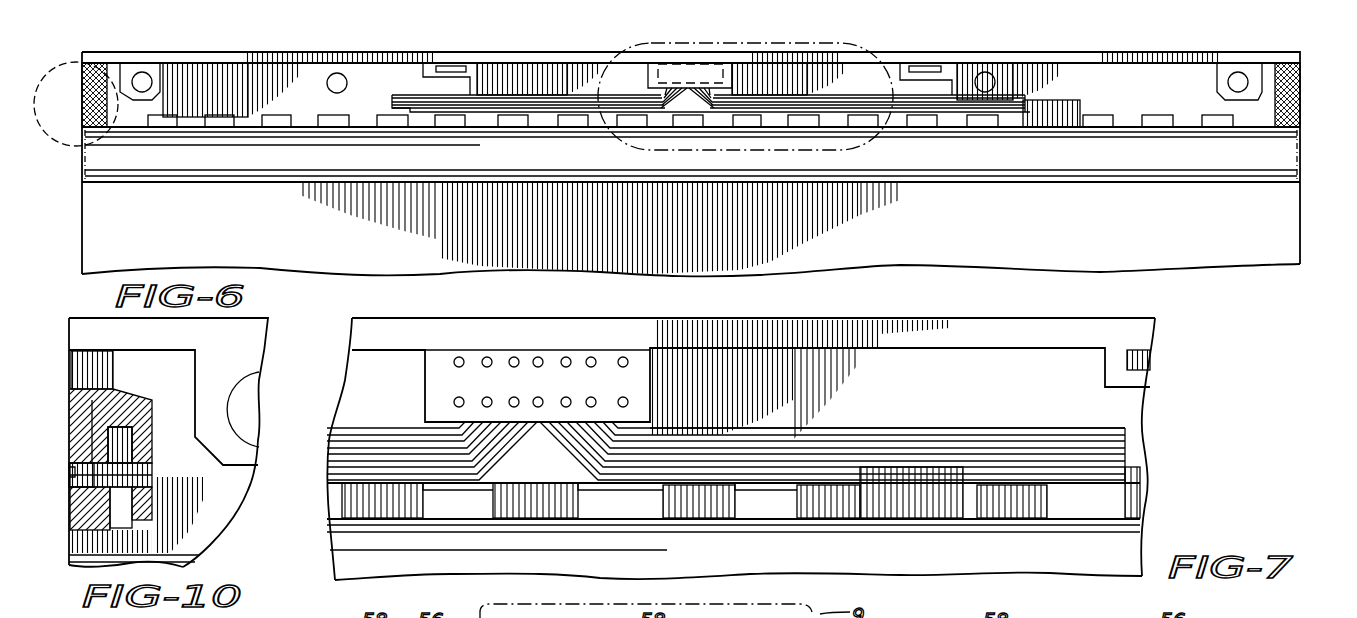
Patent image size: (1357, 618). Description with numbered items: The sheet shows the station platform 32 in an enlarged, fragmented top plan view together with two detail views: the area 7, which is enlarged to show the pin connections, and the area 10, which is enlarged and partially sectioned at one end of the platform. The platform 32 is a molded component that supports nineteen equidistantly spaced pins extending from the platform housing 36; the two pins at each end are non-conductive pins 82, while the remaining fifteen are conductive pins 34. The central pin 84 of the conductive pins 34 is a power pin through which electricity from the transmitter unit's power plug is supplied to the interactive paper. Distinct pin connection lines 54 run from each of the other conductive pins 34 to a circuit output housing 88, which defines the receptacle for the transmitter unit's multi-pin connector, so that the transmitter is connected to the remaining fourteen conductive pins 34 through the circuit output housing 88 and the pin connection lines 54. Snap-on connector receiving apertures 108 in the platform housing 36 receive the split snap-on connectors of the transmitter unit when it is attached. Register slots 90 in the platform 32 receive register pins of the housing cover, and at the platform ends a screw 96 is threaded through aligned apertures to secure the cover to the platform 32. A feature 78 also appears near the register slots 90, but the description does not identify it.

In FIG. 6, the area 10 is at (58, 62).
In FIG. 6, the screw hole 78 is at (147, 76).
In FIG. 10, the screw hole 78 is at (245, 411).
In FIG. 6, the snap-on connector receiving apertures 108 is at (342, 80).
In FIG. 6, the register slots 90 is at (468, 64).
In FIG. 10, the register slots 90 is at (118, 452).
In FIG. 7, the register slots 90 is at (1160, 325).
In FIG. 6, the circuit output housing 88 is at (688, 72).
In FIG. 7, the circuit output housing 88 is at (542, 346).
In FIG. 6, the area 7 is at (852, 46).
In FIG. 6, the pin connection lines 54 is at (1078, 100).
In FIG. 7, the pin connection lines 54 is at (936, 435).
In FIG. 6, the platform 32 is at (1300, 62).
In FIG. 10, the platform 32 is at (273, 322).
In FIG. 7, the platform 32 is at (1158, 349).
In FIG. 6, the non-conductive pins 82 is at (155, 128).
In FIG. 6, the conductive pins 34 is at (395, 128).
In FIG. 7, the conductive pins 34 is at (363, 518).
In FIG. 6, the central pin 84 is at (686, 118).
In FIG. 7, the central pin 84 is at (556, 505).
In FIG. 10, the screw 96 is at (72, 478).
In FIG. 7, the platform housing 36 is at (972, 318).